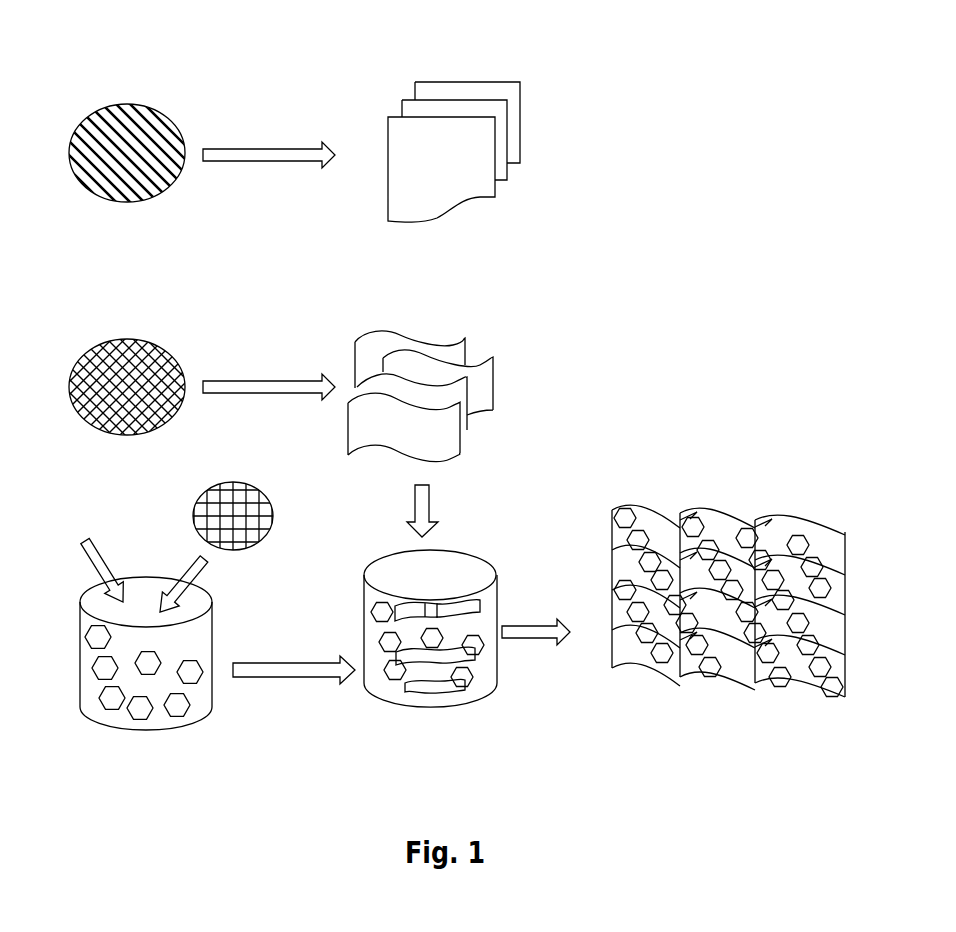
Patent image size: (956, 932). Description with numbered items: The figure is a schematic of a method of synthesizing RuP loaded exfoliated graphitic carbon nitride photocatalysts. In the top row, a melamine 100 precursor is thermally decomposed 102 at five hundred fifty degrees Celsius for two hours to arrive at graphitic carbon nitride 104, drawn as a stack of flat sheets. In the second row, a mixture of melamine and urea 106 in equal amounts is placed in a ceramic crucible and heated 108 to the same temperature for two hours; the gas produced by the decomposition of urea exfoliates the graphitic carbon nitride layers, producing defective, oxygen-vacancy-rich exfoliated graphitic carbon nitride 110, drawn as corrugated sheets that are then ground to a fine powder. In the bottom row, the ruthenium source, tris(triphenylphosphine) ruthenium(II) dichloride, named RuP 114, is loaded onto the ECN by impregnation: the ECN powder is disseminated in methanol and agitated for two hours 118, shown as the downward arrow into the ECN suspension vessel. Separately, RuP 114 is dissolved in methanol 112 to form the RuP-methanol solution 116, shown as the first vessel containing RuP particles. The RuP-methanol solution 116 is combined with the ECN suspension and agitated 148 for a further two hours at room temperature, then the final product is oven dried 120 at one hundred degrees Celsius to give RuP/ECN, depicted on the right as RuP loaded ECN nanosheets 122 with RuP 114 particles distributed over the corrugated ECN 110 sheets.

The melamine precursor 100 is at (140, 110).
The thermal decomposition 102 is at (250, 147).
The graphitic carbon nitride 104 is at (515, 100).
The mixture of melamine and urea 106 is at (100, 366).
The heating 108 is at (240, 387).
The exfoliated graphitic carbon nitride (ECN) 110 is at (483, 378).
The methanol 112 is at (80, 555).
The RuP 114 is at (220, 503).
The RuP-methanol solution 116 is at (208, 715).
The agitation of ECN suspension 118 is at (423, 508).
The oven drying 120 is at (526, 628).
The RuP loaded ECN nanosheets 122 is at (668, 494).
The agitation 148 is at (282, 668).